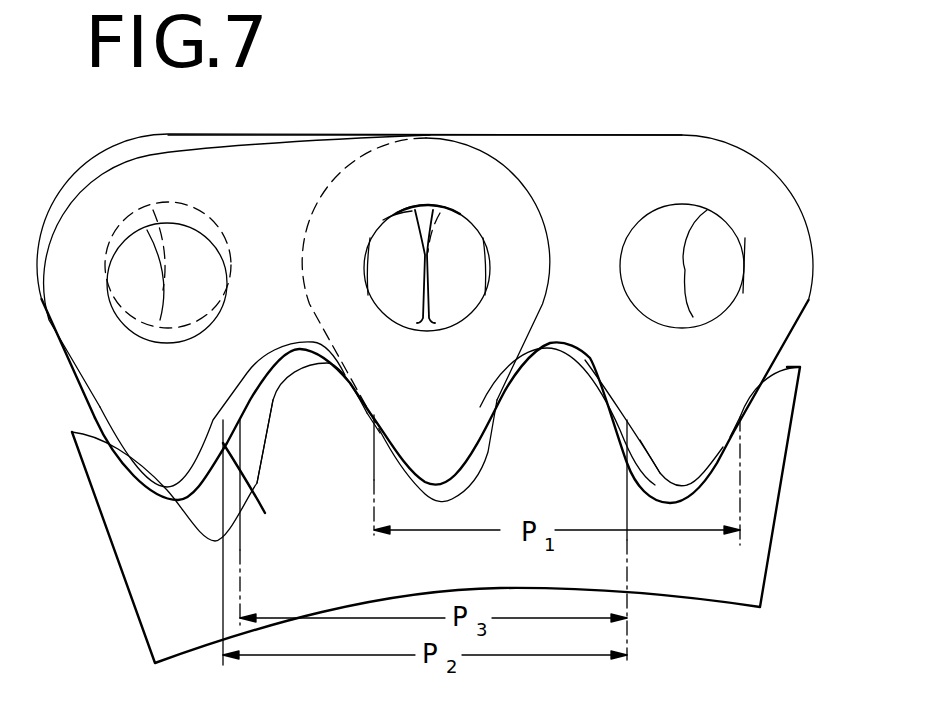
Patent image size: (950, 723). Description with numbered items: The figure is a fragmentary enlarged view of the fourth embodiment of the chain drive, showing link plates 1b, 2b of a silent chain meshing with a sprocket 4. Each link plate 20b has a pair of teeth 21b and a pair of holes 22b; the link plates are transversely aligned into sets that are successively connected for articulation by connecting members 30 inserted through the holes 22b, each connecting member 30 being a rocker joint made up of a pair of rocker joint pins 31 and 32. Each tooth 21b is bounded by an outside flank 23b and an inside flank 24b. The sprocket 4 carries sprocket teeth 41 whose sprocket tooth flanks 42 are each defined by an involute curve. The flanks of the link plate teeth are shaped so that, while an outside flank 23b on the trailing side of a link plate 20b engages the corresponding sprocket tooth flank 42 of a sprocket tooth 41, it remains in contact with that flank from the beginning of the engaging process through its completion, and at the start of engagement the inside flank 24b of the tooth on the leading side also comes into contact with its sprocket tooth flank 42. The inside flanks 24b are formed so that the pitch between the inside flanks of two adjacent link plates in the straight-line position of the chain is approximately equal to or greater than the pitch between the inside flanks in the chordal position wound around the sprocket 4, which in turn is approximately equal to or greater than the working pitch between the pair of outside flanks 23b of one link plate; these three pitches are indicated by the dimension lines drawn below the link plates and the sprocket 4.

The outer link plate 1b is at (793, 176).
The silent chain 2b is at (453, 127).
The link plate 20b is at (273, 165).
The tooth 21b is at (195, 442).
The hole 22b is at (193, 242).
The outside flank 23b is at (95, 393).
The inside flank 24b is at (265, 513).
The connecting member 30 is at (465, 207).
The rocker joint pin 31 is at (387, 240).
The rocker joint pin 32 is at (460, 247).
The sprocket 4 is at (470, 571).
The sprocket tooth 41 is at (330, 412).
The sprocket tooth flank 42 is at (267, 442).